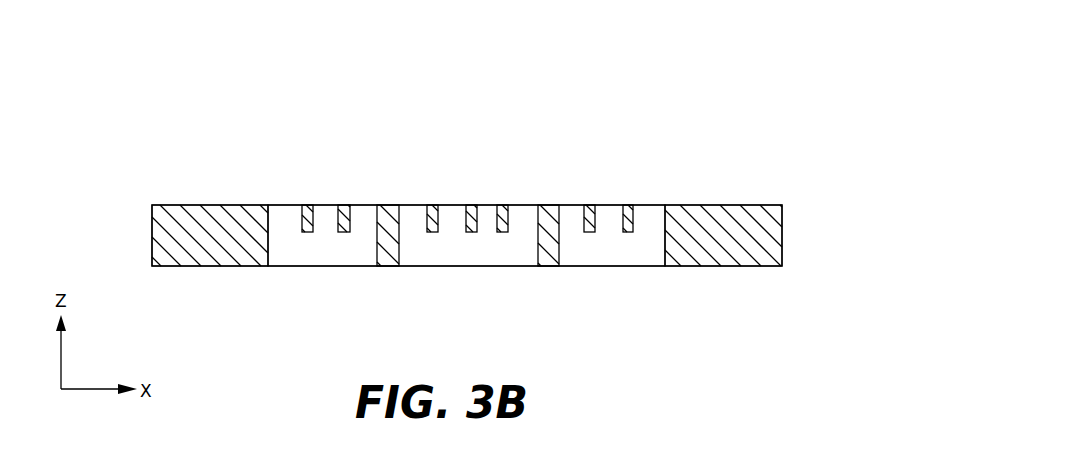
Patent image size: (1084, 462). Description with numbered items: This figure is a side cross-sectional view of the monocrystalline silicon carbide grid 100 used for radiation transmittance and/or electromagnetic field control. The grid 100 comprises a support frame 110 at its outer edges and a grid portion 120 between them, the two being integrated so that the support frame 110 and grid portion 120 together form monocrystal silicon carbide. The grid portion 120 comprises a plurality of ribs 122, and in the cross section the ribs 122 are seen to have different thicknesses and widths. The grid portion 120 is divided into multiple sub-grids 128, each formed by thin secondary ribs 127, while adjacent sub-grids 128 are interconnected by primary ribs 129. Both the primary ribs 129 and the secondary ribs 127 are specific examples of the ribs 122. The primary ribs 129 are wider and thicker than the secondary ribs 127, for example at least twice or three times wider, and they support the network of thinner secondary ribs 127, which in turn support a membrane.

The grid 100 is at (753, 182).
The support frame 110 is at (262, 279).
The grid portion 120 is at (667, 279).
The ribs 122 is at (427, 108).
The secondary ribs 127 is at (345, 203).
The sub-grids 128 is at (378, 201).
The primary ribs 129 is at (385, 203).